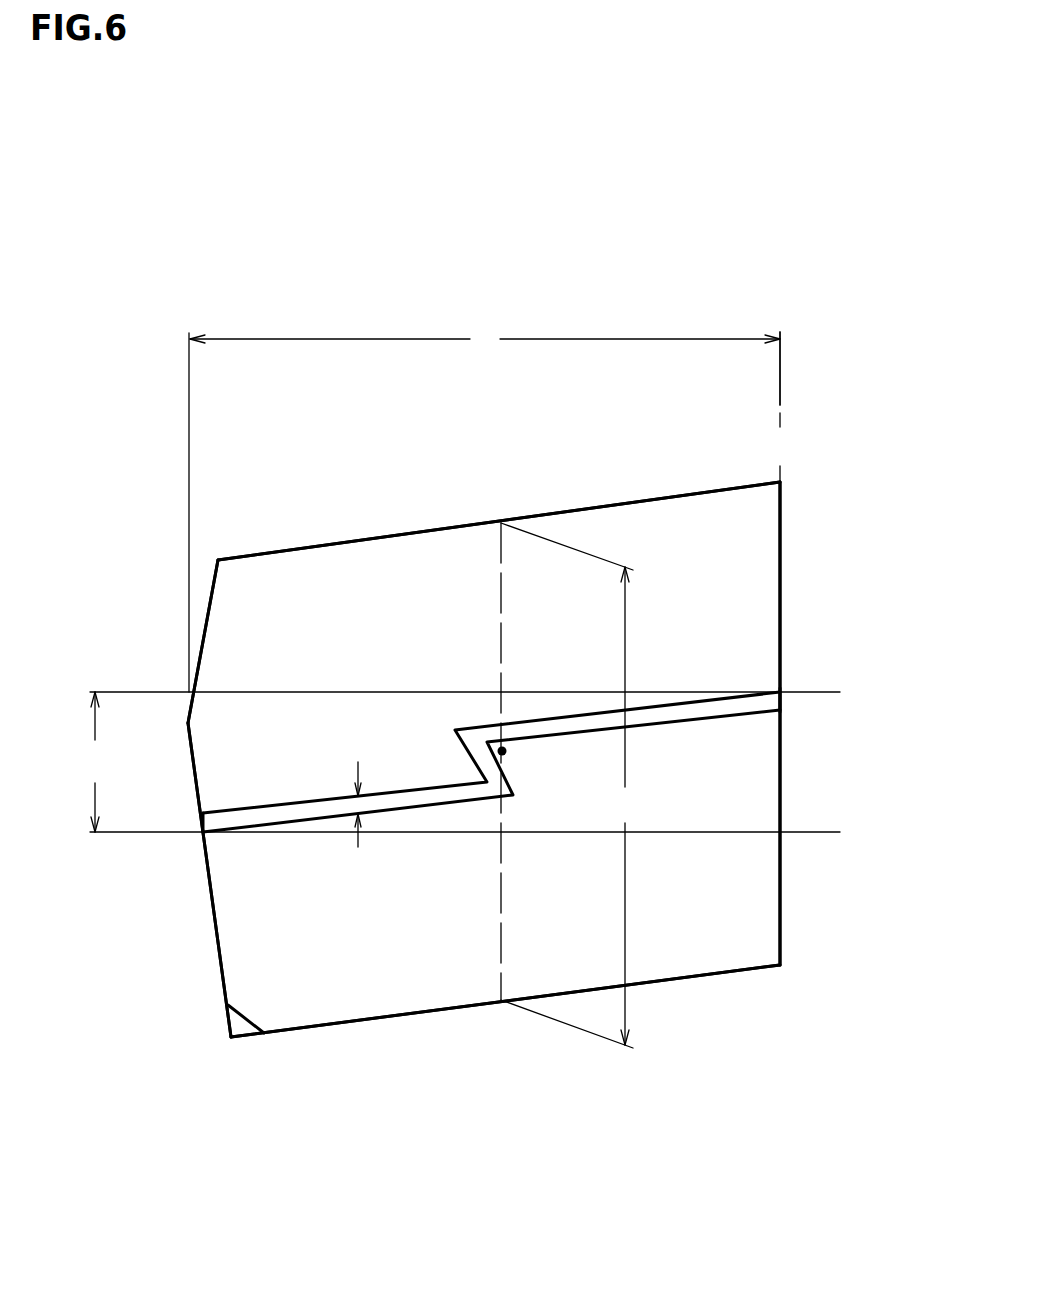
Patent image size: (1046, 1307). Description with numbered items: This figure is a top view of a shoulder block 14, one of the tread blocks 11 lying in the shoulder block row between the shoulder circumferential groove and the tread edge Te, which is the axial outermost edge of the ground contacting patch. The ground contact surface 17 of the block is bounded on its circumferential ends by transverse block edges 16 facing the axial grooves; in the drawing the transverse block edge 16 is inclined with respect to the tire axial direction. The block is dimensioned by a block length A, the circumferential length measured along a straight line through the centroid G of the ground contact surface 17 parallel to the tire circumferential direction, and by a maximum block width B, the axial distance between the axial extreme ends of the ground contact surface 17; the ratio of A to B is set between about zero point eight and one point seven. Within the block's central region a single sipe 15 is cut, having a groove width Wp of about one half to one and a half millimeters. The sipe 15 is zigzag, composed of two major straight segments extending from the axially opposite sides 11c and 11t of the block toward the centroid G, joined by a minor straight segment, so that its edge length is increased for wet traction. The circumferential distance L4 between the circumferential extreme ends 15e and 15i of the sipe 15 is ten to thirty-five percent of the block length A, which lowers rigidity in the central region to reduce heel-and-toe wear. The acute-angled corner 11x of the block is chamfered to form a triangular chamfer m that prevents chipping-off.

The tread block 11 is at (465, 600).
The shoulder block 14 is at (484, 759).
The transverse block edge 16 is at (397, 535).
The ground contact surface 17 is at (452, 963).
The sipe 15 is at (712, 710).
The circumferential extreme end of the sipe 15e is at (781, 690).
The circumferential extreme end of the sipe 15i is at (203, 832).
The side of the block 11c is at (205, 625).
The side of the block 11t is at (781, 888).
The acute-angled corner 11x is at (231, 1038).
The triangular chamfer m is at (240, 1027).
The centroid G is at (502, 751).
The block length A is at (568, 785).
The maximum block width B is at (485, 340).
The circumferential distance L4 is at (95, 762).
The groove width Wp is at (386, 805).
The tread edge Te is at (782, 377).